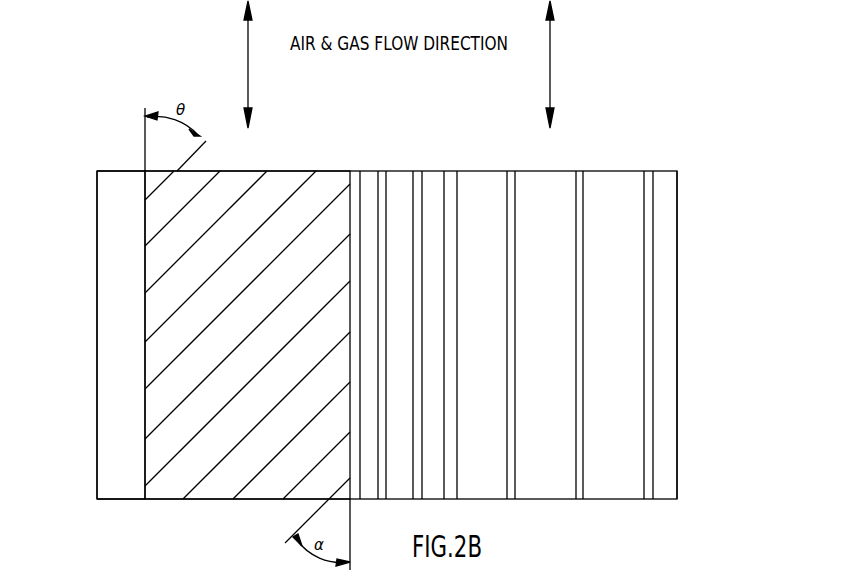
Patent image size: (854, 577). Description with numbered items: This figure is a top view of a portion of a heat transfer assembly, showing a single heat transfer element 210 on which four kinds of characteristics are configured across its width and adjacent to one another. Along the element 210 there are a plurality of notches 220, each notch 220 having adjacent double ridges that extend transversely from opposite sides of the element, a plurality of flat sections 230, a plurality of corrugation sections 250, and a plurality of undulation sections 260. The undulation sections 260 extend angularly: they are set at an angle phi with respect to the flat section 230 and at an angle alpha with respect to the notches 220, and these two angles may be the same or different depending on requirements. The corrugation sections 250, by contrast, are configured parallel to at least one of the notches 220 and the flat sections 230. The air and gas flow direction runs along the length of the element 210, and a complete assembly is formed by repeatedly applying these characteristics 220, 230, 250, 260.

The heat transfer element 210 is at (660, 172).
The notch 220 is at (415, 197).
The flat section 230 is at (128, 274).
The corrugation section 250 is at (655, 297).
The undulation section 260 is at (165, 368).